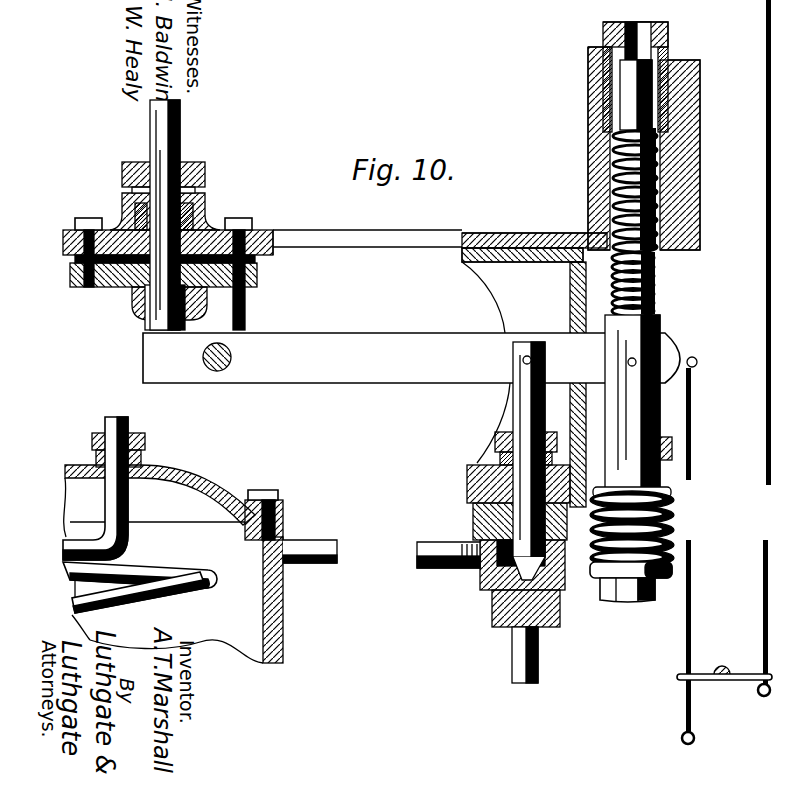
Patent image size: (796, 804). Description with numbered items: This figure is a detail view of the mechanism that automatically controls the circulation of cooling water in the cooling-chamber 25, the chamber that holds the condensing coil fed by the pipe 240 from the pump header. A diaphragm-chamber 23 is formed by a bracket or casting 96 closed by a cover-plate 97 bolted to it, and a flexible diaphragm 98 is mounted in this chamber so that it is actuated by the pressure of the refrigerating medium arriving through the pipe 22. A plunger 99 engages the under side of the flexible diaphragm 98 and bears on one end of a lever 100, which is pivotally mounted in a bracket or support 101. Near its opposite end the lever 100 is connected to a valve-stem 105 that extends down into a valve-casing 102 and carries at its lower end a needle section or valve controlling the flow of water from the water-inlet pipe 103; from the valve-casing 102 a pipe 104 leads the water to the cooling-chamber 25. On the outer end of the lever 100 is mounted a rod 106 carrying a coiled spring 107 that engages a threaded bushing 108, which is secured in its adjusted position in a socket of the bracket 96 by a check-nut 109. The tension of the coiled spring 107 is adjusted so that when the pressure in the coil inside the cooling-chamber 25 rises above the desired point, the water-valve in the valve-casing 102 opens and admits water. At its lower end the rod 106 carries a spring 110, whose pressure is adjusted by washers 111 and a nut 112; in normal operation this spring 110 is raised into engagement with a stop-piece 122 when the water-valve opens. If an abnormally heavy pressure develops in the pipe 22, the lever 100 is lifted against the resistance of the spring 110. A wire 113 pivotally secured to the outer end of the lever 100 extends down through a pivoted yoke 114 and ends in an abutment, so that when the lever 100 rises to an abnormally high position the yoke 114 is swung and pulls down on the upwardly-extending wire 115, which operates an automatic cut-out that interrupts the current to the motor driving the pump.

The pipe 22 is at (183, 131).
The diaphragm-chamber 23 is at (266, 220).
The bracket or casting 96 is at (316, 236).
The cover-plate 97 is at (120, 270).
The flexible diaphragm 98 is at (117, 228).
The plunger 99 is at (150, 310).
The lever 100 is at (340, 342).
The bracket or support 101 is at (228, 315).
The valve-casing 102 is at (492, 515).
The water-inlet pipe 103 is at (542, 660).
The pipe 104 is at (433, 574).
The valve-stem 105 is at (520, 407).
The rod 106 is at (662, 318).
The coiled spring 107 is at (655, 272).
The threaded bushing 108 is at (668, 30).
The check-nut 109 is at (700, 51).
The spring 110 is at (670, 508).
The washers 111 is at (668, 569).
The nut 112 is at (634, 602).
The wire 113 is at (692, 413).
The pivoted yoke 114 is at (716, 682).
The wire 115 is at (770, 604).
The stop-piece 122 is at (673, 447).
The pipe 240 is at (132, 423).
The cooling-chamber 25 is at (276, 612).